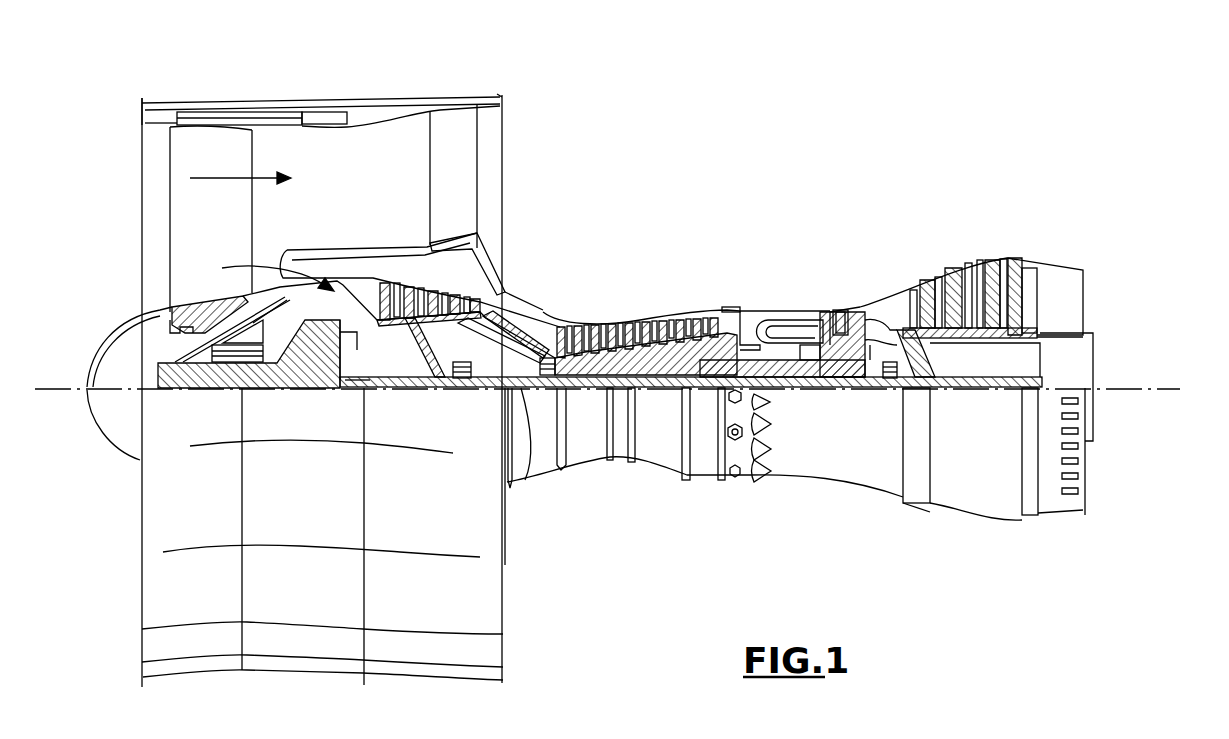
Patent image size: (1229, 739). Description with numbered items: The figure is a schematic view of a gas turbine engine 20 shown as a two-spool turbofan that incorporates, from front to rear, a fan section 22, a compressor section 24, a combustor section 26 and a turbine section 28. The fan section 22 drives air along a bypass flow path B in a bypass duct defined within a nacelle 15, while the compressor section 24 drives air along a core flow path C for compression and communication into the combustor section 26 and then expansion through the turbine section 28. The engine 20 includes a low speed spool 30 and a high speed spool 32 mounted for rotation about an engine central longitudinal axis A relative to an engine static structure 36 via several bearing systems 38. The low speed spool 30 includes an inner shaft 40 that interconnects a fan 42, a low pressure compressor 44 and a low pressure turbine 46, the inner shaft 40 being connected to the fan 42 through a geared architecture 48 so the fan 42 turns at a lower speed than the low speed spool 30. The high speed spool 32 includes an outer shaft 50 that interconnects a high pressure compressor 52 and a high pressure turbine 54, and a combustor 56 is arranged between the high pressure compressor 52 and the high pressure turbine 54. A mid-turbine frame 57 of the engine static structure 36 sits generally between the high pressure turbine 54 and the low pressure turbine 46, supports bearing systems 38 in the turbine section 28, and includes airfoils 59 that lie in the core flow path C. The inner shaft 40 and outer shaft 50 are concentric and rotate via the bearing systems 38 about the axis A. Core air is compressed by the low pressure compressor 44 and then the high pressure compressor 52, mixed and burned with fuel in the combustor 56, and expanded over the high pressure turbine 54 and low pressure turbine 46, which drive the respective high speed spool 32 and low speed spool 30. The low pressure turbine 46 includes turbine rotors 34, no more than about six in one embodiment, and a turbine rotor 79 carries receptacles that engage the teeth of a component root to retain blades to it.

The nacelle 15 is at (325, 108).
The gas turbine engine 20 is at (784, 158).
The fan section 22 is at (252, 97).
The compressor section 24 is at (556, 295).
The combustor section 26 is at (779, 283).
The turbine section 28 is at (925, 246).
The low speed spool 30 is at (661, 398).
The high speed spool 32 is at (697, 357).
The turbine rotors 34 is at (1017, 260).
The engine static structure 36 is at (701, 482).
The bearing systems 38 is at (464, 379).
The inner shaft 40 is at (522, 392).
The fan 42 is at (225, 234).
The low pressure compressor 44 is at (428, 298).
The low pressure turbine 46 is at (972, 278).
The geared architecture 48 is at (330, 368).
The outer shaft 50 is at (790, 372).
The high pressure compressor 52 is at (637, 358).
The high pressure turbine 54 is at (840, 315).
The combustor 56 is at (772, 328).
The mid-turbine frame 57 is at (887, 298).
The airfoils 59 is at (885, 330).
The turbine rotor 79 is at (818, 330).
The engine central longitudinal axis A is at (1180, 388).
The bypass flow path B is at (225, 178).
The core flow path C is at (269, 274).